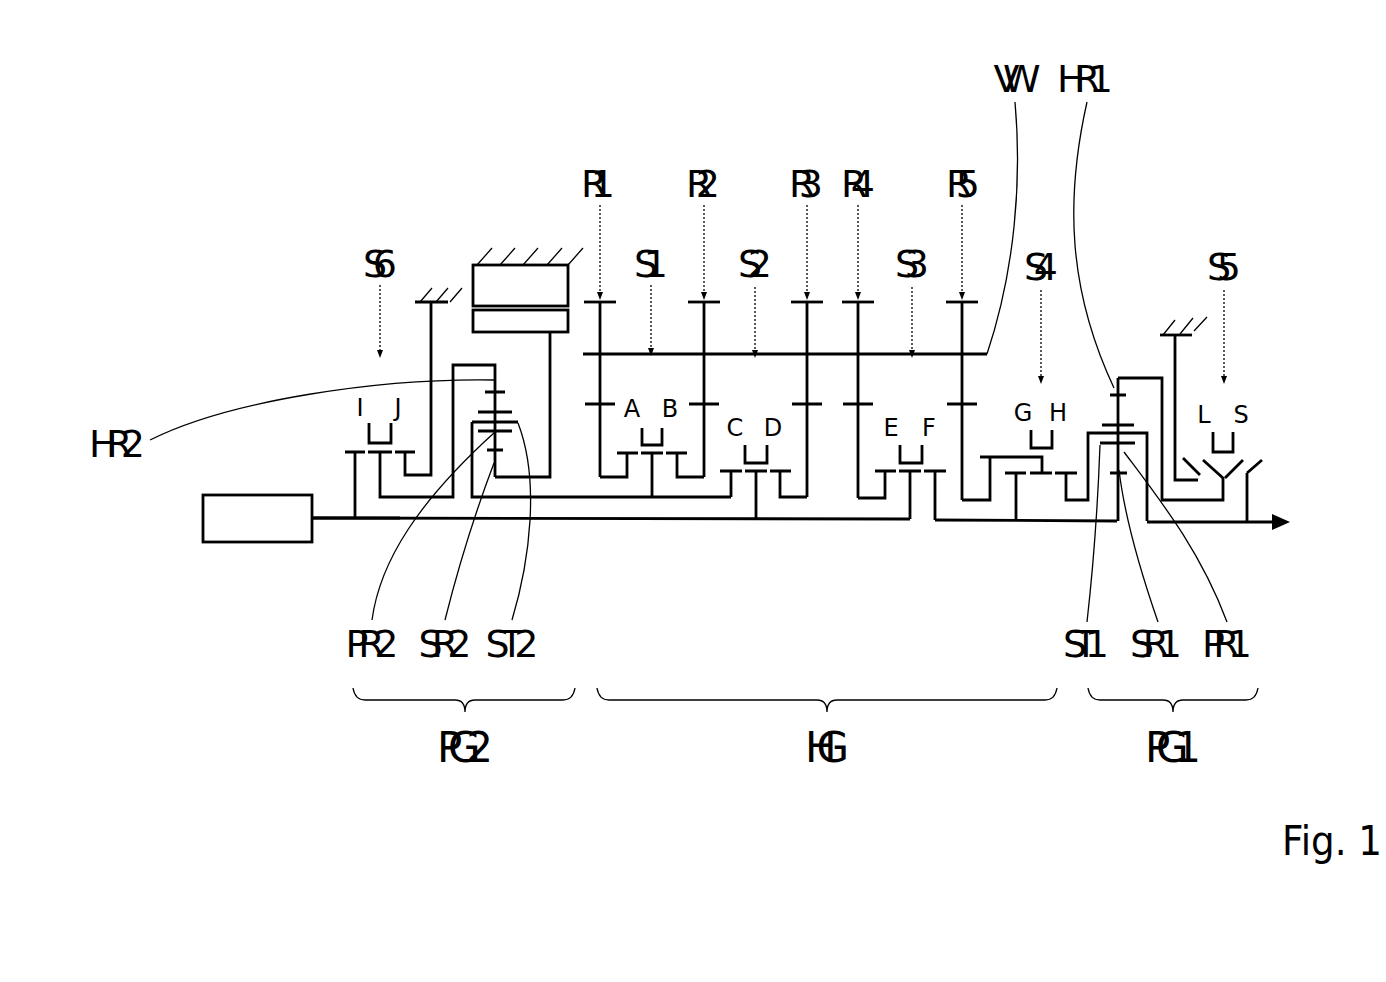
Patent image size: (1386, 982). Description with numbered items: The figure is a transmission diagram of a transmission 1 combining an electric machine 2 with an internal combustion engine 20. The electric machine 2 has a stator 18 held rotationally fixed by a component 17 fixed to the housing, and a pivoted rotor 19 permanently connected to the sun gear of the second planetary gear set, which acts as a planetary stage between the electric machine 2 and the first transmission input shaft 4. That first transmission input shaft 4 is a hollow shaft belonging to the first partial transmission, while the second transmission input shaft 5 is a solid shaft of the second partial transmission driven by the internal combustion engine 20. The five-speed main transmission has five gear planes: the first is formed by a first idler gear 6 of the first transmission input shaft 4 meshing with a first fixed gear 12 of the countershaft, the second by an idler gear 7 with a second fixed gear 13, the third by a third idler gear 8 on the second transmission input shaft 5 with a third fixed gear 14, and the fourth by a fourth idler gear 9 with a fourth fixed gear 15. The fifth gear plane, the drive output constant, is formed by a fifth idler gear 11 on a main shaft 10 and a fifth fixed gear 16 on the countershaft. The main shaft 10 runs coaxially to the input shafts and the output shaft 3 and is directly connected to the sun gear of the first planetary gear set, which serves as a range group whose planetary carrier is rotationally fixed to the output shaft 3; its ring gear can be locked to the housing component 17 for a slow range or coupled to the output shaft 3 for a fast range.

The transmission 1 is at (1213, 157).
The electric machine 2 is at (462, 272).
The output shaft 3 is at (1262, 525).
The first transmission input shaft 4 is at (628, 500).
The second transmission input shaft 5 is at (372, 520).
The first idler gear 6 is at (600, 440).
The idler gear 7 is at (704, 450).
The third idler gear 8 is at (807, 450).
The fourth idler gear 9 is at (858, 447).
The main shaft 10 is at (992, 525).
The fifth idler gear 11 is at (962, 455).
The first fixed gear 12 is at (608, 300).
The second fixed gear 13 is at (712, 302).
The third fixed gear 14 is at (805, 302).
The fourth fixed gear 15 is at (866, 302).
The fifth fixed gear 16 is at (952, 302).
The component fixed to the housing 17 is at (440, 287).
The stator 18 is at (525, 287).
The rotor 19 is at (505, 322).
The internal combustion engine 20 is at (245, 517).